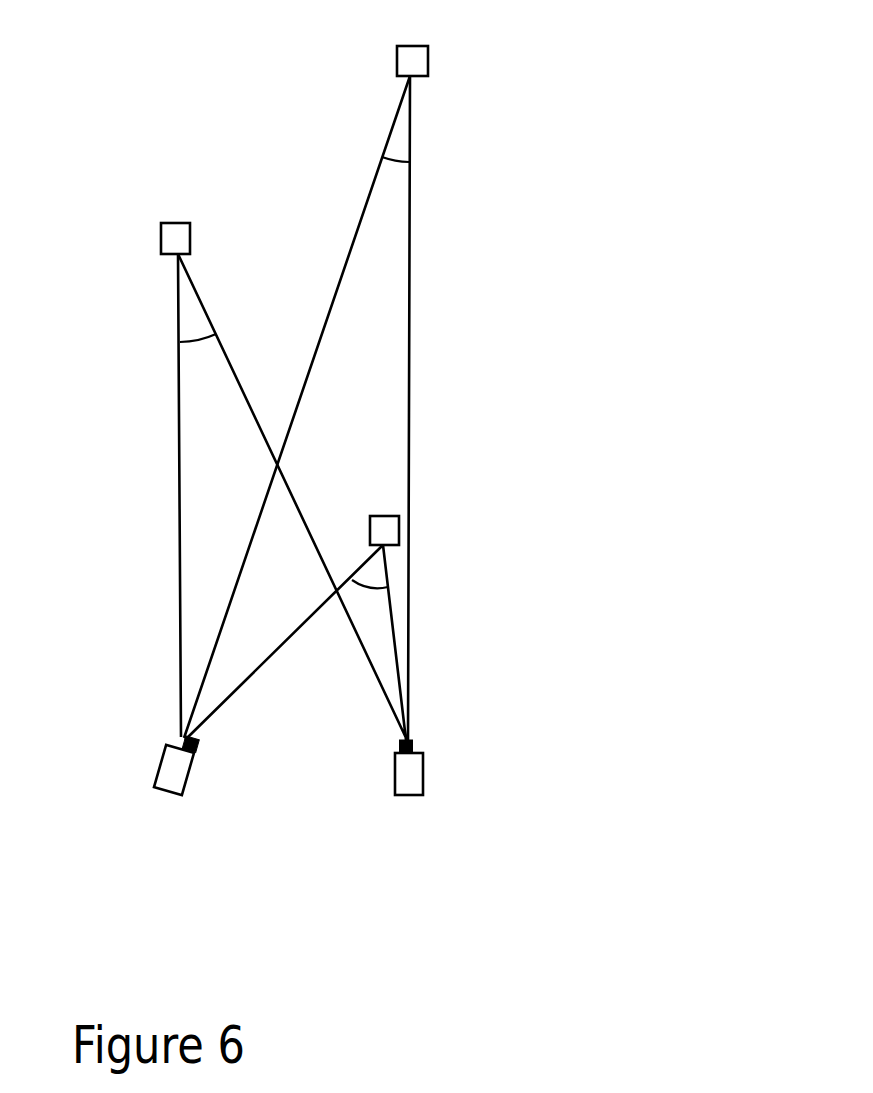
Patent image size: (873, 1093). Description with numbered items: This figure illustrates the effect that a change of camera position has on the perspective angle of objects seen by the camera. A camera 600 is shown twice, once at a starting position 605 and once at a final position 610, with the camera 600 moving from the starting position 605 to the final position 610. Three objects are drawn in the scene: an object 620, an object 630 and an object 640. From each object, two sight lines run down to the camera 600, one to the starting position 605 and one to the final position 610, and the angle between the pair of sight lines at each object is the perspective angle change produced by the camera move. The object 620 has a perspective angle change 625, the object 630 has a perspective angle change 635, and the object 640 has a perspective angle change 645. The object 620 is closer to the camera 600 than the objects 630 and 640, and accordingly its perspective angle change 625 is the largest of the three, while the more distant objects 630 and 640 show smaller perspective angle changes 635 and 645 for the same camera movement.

The camera 600 is at (165, 774).
The starting position 605 is at (281, 488).
The final position 610 is at (300, 488).
The object 620 is at (388, 528).
The perspective angle change 625 is at (372, 597).
The object 630 is at (417, 56).
The perspective angle change 635 is at (393, 170).
The object 640 is at (172, 238).
The perspective angle change 645 is at (198, 350).